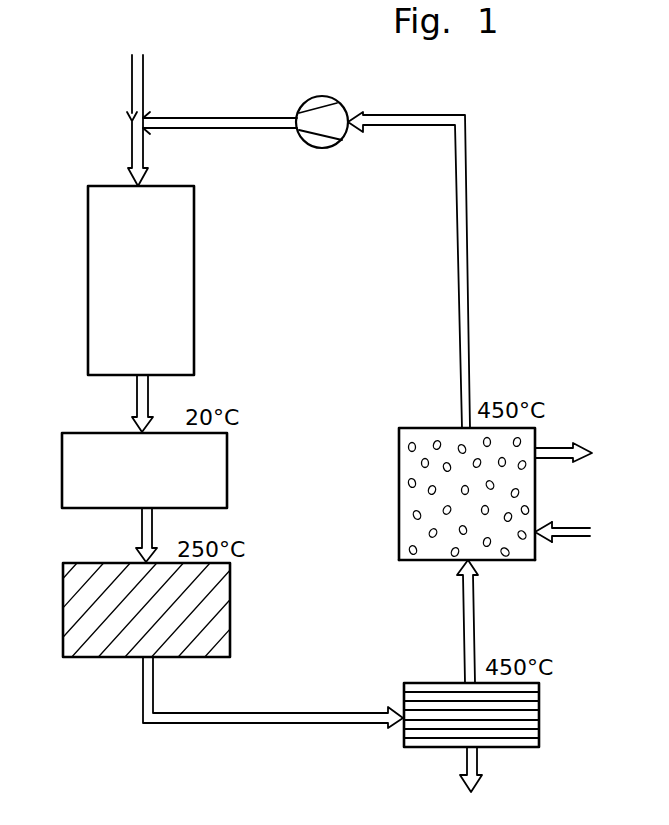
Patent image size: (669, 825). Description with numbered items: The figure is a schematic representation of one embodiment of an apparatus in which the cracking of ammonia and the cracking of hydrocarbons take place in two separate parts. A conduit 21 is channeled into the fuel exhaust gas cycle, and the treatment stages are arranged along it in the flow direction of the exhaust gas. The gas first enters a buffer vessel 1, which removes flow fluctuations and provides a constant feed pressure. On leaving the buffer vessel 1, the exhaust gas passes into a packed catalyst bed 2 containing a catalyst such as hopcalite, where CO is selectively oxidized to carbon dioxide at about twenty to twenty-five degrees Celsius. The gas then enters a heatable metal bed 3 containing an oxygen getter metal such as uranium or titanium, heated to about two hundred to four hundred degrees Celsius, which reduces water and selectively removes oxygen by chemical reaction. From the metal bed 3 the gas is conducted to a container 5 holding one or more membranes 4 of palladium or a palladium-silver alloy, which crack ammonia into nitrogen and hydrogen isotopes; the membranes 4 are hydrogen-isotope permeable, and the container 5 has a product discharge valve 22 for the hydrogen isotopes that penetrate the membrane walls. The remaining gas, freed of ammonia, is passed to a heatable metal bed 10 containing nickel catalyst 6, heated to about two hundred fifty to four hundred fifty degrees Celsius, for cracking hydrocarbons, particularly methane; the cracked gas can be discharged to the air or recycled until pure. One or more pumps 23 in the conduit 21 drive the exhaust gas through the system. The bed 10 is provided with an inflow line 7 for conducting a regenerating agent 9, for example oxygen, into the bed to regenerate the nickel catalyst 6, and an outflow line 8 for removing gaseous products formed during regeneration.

The buffer vessel 1 is at (147, 293).
The packed catalyst bed 2 is at (75, 448).
The heatable metal bed 3 is at (73, 582).
The membranes 4 is at (443, 737).
The container 5 is at (417, 748).
The nickel catalyst 6 is at (520, 543).
The inflow line 7 is at (538, 522).
The outflow line 8 is at (537, 445).
The regenerating agent 9 is at (590, 528).
The heatable metal bed 10 is at (513, 560).
The conduit 21 is at (220, 117).
The product discharge valve 22 is at (477, 748).
The pumps 23 is at (333, 128).